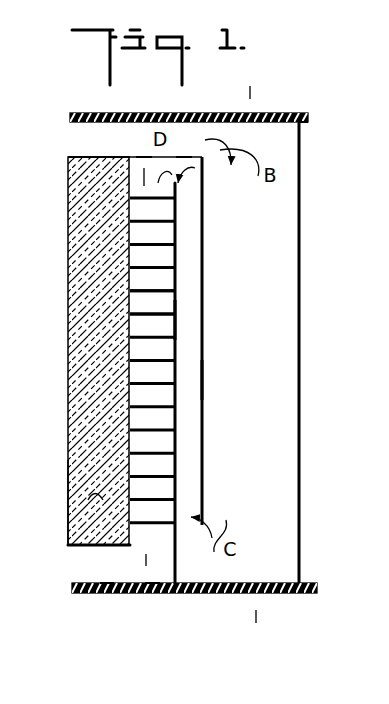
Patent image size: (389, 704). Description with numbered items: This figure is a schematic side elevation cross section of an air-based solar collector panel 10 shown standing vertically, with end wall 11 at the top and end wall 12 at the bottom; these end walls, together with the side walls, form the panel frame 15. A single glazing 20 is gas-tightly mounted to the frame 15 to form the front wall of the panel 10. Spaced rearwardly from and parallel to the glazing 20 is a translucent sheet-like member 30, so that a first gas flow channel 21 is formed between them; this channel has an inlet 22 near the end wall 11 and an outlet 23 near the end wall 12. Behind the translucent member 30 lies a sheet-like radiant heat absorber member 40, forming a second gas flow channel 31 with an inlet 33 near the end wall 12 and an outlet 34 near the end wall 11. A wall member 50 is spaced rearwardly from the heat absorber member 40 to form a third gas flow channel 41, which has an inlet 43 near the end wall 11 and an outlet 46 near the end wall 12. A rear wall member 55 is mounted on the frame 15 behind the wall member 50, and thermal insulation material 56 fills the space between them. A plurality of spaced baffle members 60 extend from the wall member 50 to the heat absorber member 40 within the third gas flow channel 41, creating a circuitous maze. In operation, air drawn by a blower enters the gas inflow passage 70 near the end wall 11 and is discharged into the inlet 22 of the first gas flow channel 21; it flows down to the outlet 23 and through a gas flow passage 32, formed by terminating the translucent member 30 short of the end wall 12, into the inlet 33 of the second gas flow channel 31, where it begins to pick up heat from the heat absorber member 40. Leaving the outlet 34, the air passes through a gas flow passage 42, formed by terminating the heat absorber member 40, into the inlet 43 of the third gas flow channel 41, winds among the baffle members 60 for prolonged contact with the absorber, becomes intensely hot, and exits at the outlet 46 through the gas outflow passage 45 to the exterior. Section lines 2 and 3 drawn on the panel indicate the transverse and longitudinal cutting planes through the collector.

The solar collector panel 10 is at (219, 357).
The end wall 11 is at (98, 113).
The end wall 12 is at (292, 594).
The panel frame 15 is at (297, 101).
The glazing 20 is at (302, 423).
The first gas flow channel 21 is at (264, 393).
The inlet of first gas flow channel 22 is at (265, 150).
The outlet of first gas flow channel 23 is at (269, 560).
The translucent material sheet-like member 30 is at (205, 447).
The second gas flow channel 31 is at (196, 338).
The gas flow passage 32 is at (212, 563).
The inlet of second gas flow channel 33 is at (187, 513).
The outlet of second gas flow channel 34 is at (208, 167).
The radiant heat absorber member 40 is at (177, 229).
The third gas flow channel 41 is at (140, 393).
The gas flow passage 42 is at (182, 163).
The inlet of third gas flow channel 43 is at (143, 164).
The gas outflow passage 45 is at (107, 571).
The outlet of third gas flow channel 46 is at (153, 568).
The wall member 50 is at (163, 276).
The rear wall member 55 is at (72, 482).
The thermal insulation material 56 is at (95, 493).
The baffle members 60 is at (163, 303).
The gas inflow passage 70 is at (86, 140).
The section line 2- 2 is at (285, 92).
The section line 3- 3 is at (144, 176).